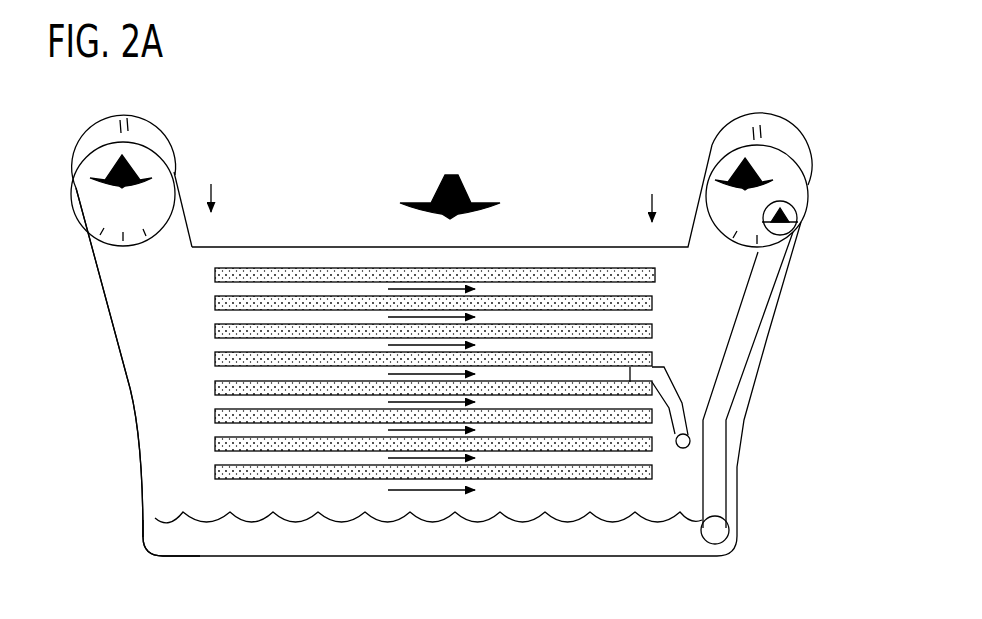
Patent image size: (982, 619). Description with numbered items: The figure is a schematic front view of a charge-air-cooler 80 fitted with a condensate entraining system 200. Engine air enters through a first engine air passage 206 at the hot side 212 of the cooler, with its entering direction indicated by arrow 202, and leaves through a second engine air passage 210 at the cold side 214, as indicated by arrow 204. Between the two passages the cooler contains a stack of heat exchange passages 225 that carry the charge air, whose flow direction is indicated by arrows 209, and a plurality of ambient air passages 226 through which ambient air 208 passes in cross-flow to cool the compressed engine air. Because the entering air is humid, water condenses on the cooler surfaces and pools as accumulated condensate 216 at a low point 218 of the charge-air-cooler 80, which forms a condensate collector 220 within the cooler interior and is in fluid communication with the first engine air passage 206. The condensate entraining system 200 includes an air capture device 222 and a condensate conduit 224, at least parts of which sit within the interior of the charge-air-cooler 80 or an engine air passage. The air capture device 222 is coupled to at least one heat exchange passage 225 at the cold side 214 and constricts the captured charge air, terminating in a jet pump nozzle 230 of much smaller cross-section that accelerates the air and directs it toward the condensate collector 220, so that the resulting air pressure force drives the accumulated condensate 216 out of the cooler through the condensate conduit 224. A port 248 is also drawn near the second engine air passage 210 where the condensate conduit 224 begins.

The condensate entraining system 200 is at (636, 60).
The charge-air-cooler 80 is at (300, 246).
The arrow indicating engine airflow entering charge-air-cooler 202 is at (121, 152).
The arrow indicating engine airflow exiting charge-air-cooler 204 is at (744, 158).
The first engine air passage 206 is at (144, 218).
The ambient air 208 is at (412, 202).
The arrows indicating charge air flow 209 is at (372, 396).
The second engine air passage 210 is at (758, 217).
The hot side 212 is at (213, 186).
The cold side 214 is at (653, 196).
The accumulated condensate 216 is at (259, 546).
The low point 218 is at (127, 473).
The condensate collector 220 is at (138, 535).
The air capture device 222 is at (674, 366).
The condensate conduit 224 is at (721, 463).
The heat exchange passages 225 is at (209, 457).
The ambient air passages 226 is at (212, 272).
The jet pump nozzle 230 is at (678, 447).
The outlet port 248 is at (797, 215).